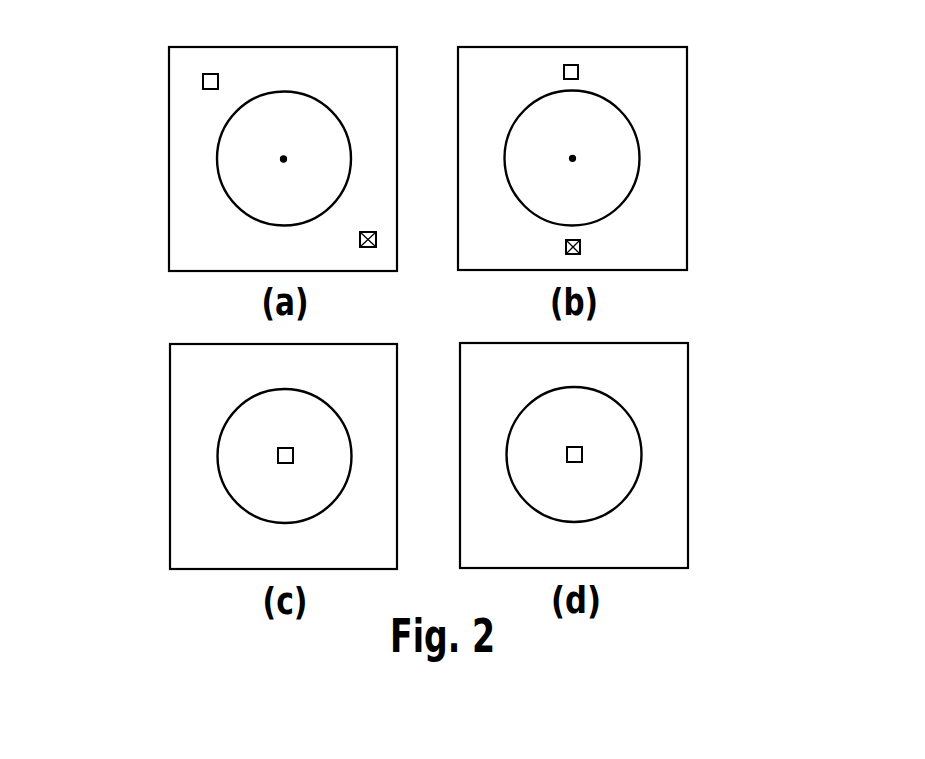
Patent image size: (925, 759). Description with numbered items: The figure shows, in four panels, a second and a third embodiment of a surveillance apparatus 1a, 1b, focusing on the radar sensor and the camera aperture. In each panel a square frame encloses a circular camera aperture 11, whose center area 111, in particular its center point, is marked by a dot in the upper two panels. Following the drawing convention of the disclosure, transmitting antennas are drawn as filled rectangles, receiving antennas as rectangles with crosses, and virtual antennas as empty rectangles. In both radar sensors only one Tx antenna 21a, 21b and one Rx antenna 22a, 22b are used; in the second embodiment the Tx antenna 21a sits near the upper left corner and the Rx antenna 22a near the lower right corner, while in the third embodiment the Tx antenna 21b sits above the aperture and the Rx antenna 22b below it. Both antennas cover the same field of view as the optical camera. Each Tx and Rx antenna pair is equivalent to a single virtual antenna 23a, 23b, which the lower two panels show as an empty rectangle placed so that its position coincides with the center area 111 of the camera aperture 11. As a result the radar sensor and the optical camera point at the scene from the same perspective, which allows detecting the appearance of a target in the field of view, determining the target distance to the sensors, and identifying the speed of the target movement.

The surveillance apparatus 1a is at (140, 56).
The surveillance apparatus 1b is at (718, 53).
The camera aperture 11 is at (217, 158).
The center area of the camera aperture 111 is at (283, 160).
The Tx antenna 21a is at (218, 81).
The Tx antenna 21b is at (578, 72).
The Rx antenna 22a is at (360, 240).
The Rx antenna 22b is at (580, 247).
The virtual antenna 23a is at (277, 456).
The virtual antenna 23b is at (582, 454).